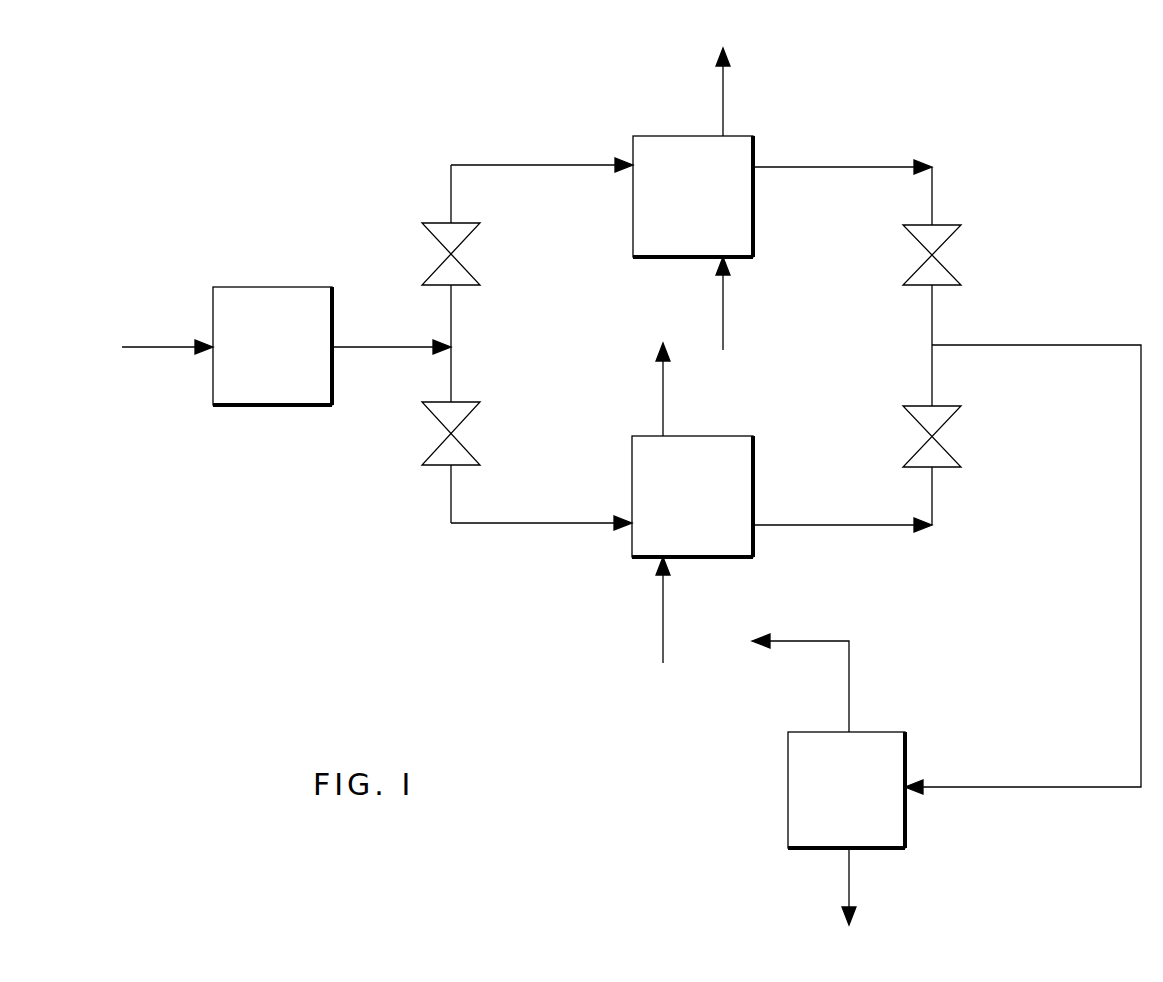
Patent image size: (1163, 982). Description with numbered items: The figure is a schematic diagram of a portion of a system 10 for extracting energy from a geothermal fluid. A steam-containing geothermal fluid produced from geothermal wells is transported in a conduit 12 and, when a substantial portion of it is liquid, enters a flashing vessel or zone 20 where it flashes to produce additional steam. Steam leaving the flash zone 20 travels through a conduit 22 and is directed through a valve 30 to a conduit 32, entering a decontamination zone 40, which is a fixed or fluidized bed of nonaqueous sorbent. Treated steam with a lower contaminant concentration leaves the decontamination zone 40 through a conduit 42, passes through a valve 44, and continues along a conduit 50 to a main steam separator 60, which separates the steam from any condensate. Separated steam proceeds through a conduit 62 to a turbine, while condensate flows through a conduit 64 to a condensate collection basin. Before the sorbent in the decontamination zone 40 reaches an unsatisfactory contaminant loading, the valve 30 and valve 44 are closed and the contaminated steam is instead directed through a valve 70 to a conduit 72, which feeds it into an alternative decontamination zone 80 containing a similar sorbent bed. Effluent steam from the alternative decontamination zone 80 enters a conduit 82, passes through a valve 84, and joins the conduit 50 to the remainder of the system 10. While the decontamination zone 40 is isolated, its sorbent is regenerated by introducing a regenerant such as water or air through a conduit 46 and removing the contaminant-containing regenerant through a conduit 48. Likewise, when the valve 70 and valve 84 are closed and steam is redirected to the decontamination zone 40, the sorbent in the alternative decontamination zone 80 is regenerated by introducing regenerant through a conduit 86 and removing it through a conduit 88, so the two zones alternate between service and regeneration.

The system 10 is at (1036, 144).
The conduit 12 is at (144, 347).
The flashing vessel or zone 20 is at (290, 360).
The conduit 22 is at (366, 347).
The valve 30 is at (466, 271).
The conduit 32 is at (494, 165).
The decontamination zone 40 is at (712, 213).
The conduit 42 is at (853, 167).
The valve 44 is at (946, 240).
The conduit 46 is at (725, 302).
The conduit 48 is at (725, 101).
The conduit 50 is at (1141, 538).
The main steam separator 60 is at (858, 801).
The conduit 62 is at (851, 681).
The conduit 64 is at (851, 878).
The valve 70 is at (437, 445).
The conduit 72 is at (529, 523).
The alternative decontamination zone 80 is at (712, 509).
The conduit 82 is at (809, 525).
The valve 84 is at (948, 420).
The conduit 86 is at (661, 605).
The conduit 88 is at (665, 395).